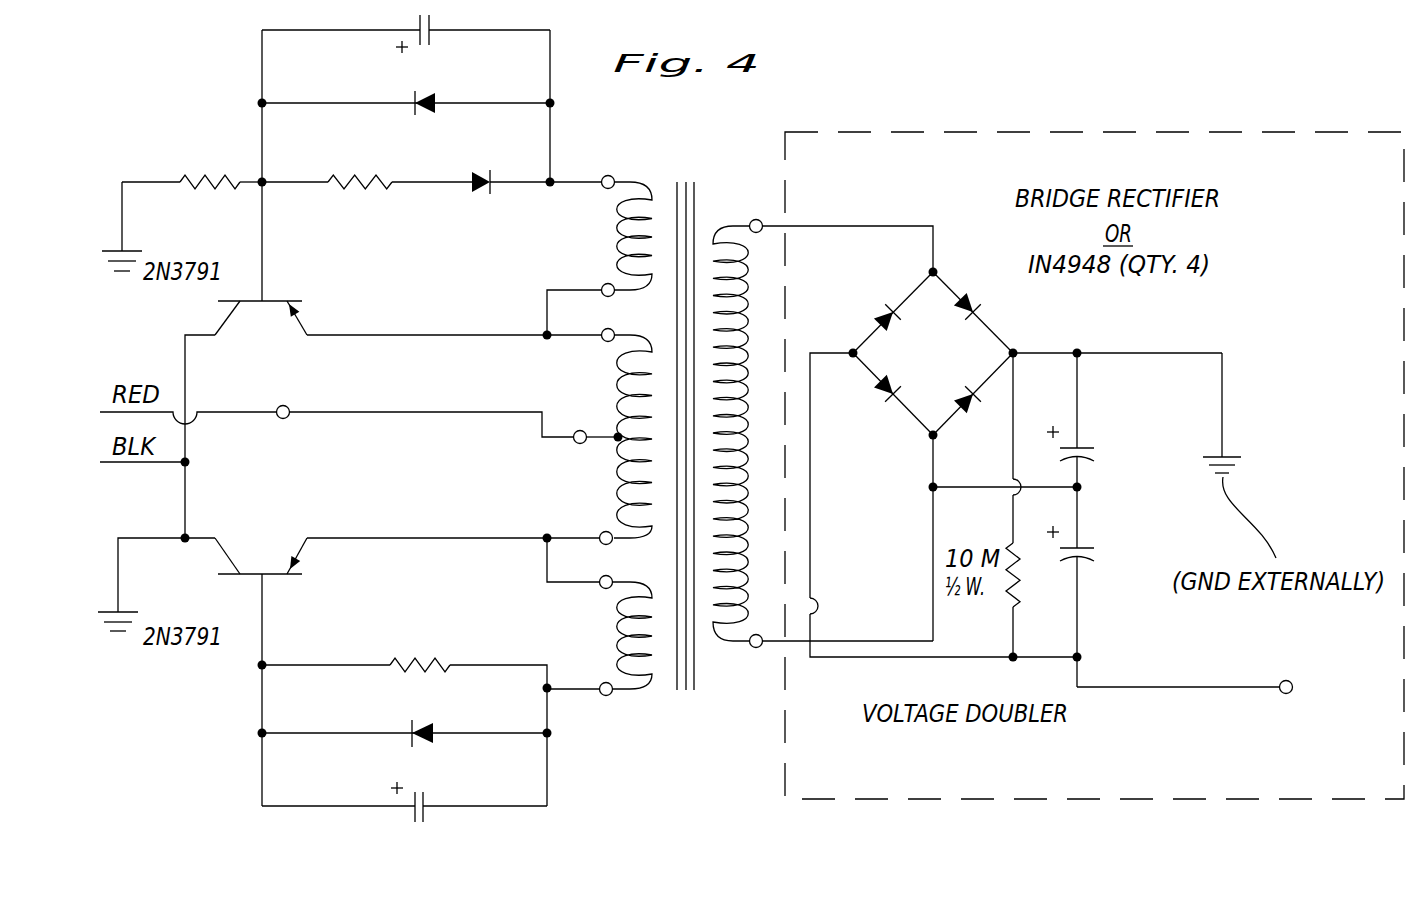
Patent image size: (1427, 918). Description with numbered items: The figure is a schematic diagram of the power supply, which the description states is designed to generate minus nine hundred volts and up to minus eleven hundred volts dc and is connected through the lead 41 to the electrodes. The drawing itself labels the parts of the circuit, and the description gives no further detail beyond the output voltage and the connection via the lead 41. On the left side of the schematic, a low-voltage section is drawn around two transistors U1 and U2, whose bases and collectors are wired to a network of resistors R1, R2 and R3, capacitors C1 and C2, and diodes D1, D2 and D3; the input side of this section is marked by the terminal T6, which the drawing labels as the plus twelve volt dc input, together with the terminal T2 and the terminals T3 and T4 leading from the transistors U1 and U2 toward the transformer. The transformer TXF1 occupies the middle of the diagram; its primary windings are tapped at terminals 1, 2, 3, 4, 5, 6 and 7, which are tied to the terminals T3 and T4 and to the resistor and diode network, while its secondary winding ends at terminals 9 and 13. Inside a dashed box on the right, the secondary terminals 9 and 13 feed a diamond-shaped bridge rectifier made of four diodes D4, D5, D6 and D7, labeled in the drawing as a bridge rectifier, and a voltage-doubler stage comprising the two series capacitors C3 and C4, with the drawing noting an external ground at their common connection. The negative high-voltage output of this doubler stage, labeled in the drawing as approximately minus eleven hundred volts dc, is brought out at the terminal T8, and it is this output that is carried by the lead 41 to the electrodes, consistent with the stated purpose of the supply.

The lead 41 is at (1137, 687).
The resistor 560 ohm 5W R1 is at (192, 132).
The resistor 3.9 ohm 10W R2 is at (367, 196).
The resistor 3.9 ohm 10W R3 is at (429, 699).
The capacitor 22 MFD 25 VDC C1 is at (406, 44).
The capacitor 22 MFD 25 VDC C2 is at (404, 791).
The capacitor 2.2 MFD 630 VDC C3 is at (1123, 420).
The capacitor 2.2 MFD 630 VDC C4 is at (1123, 587).
The diode IN4948 D1 is at (406, 91).
The diode IN4849 D2 is at (533, 188).
The diode IN4948 D3 is at (405, 740).
The bridge rectifier diode D4 is at (893, 312).
The bridge rectifier diode D5 is at (973, 312).
The bridge rectifier diode D6 is at (893, 394).
The bridge rectifier diode D7 is at (973, 394).
The transistor 2N3791 U1 is at (261, 260).
The transistor 2N3791 U2 is at (261, 670).
The terminal T2 is at (166, 557).
The terminal T3 is at (454, 330).
The terminal T4 is at (453, 542).
The terminal T6 +12VDC input T6 is at (337, 408).
The terminal T8 output T8 is at (1289, 670).
The transformer TXF1 is at (692, 405).
The transformer primary terminal 1 is at (605, 676).
The transformer primary terminal 2 is at (605, 568).
The transformer primary terminal 3 is at (605, 524).
The transformer primary terminal 4 is at (597, 423).
The transformer primary terminal 5 is at (607, 322).
The transformer primary terminal 6 is at (606, 276).
The transformer primary terminal 7 is at (607, 167).
The transformer secondary terminal 9 is at (757, 211).
The transformer secondary terminal 13 is at (754, 655).